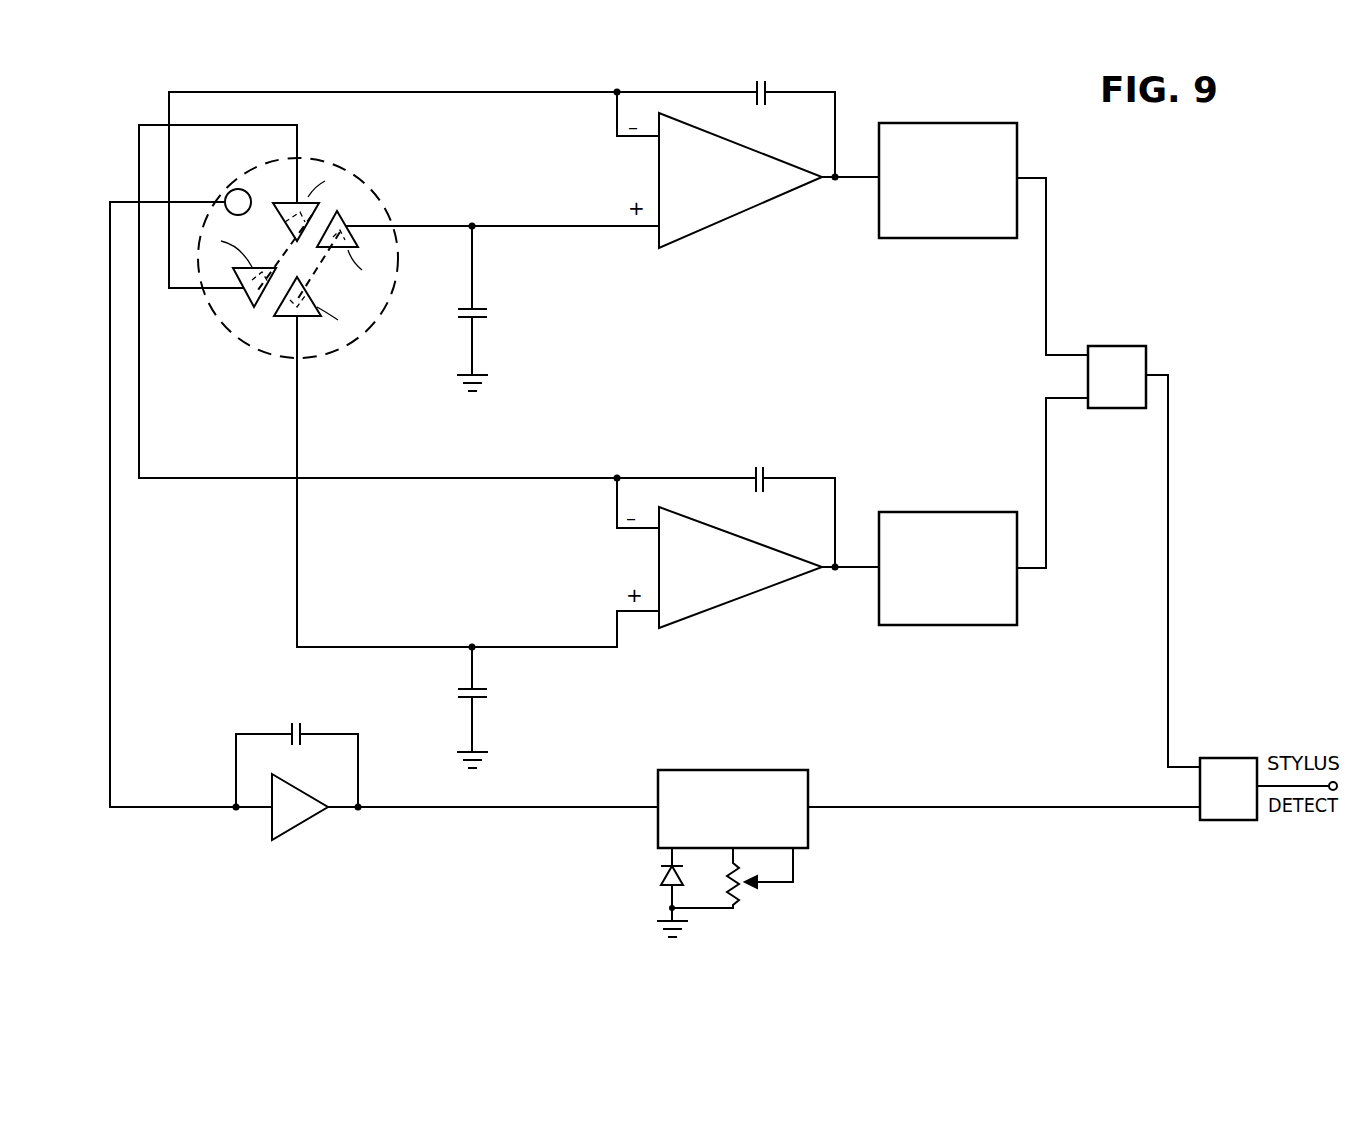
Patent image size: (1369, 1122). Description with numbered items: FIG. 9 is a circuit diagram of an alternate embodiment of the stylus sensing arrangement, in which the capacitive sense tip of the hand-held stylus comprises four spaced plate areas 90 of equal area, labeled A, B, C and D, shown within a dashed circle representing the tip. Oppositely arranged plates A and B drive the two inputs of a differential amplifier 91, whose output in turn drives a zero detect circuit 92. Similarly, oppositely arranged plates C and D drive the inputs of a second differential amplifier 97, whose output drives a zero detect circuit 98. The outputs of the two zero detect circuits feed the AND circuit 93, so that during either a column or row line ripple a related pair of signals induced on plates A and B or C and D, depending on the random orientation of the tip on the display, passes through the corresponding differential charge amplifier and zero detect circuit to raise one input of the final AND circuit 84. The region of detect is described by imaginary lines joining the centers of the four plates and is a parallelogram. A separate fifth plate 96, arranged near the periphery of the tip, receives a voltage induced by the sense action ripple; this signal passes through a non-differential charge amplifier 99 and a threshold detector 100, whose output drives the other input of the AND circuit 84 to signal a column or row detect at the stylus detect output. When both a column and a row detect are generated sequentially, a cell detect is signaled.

The AND circuit 84 is at (1225, 763).
The spaced plate areas 90 is at (258, 290).
The differential amplifier 91 is at (762, 193).
The zero detect circuit 92 is at (980, 123).
The AND circuit 93 is at (1115, 350).
The fifth plate 96 is at (234, 190).
The differential amplifier 97 is at (762, 577).
The zero detect circuit 98 is at (972, 613).
The non-differential charge amplifier 99 is at (300, 817).
The threshold detector 100 is at (755, 775).